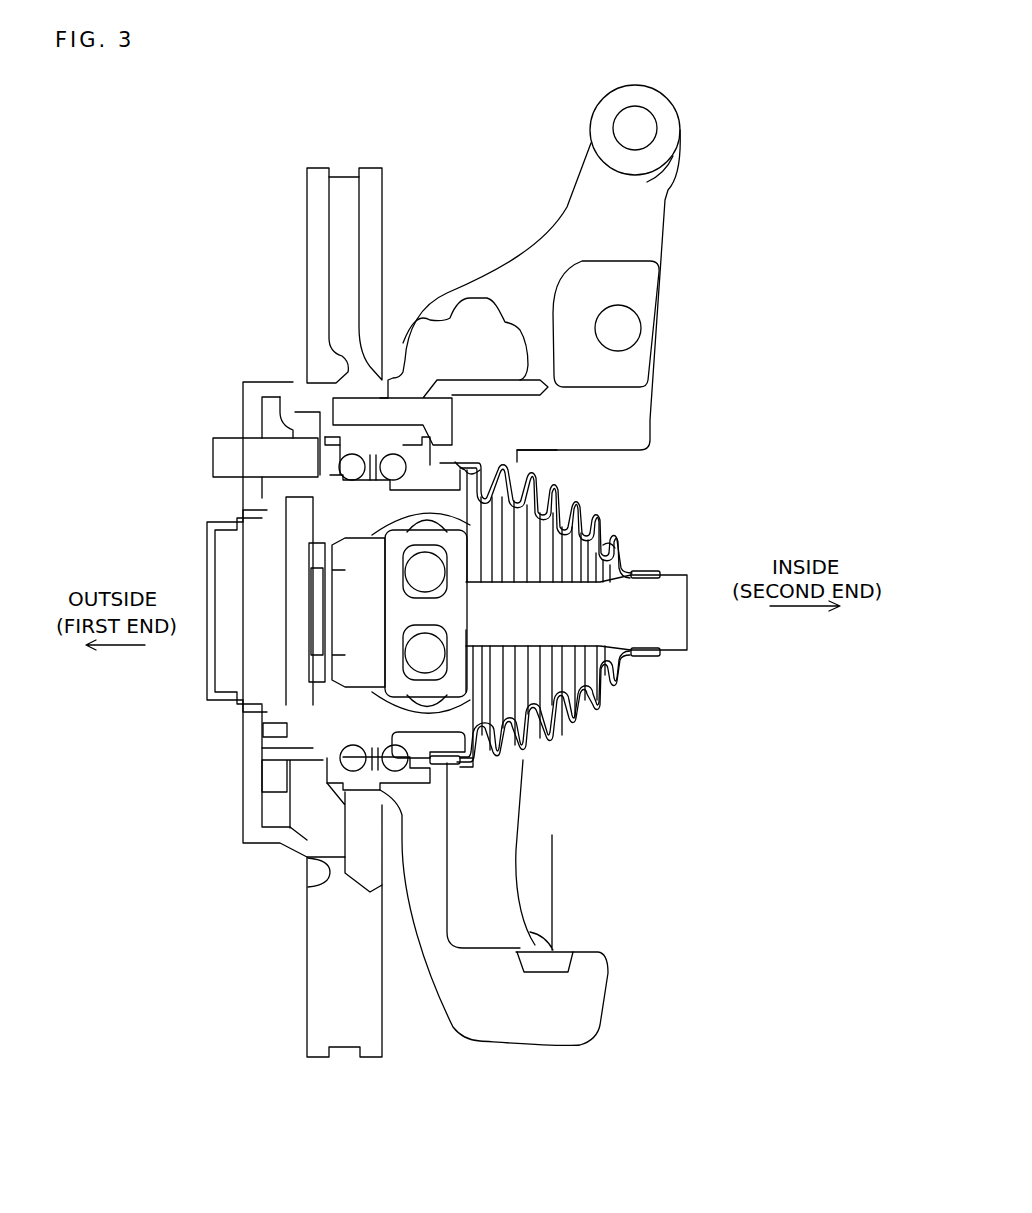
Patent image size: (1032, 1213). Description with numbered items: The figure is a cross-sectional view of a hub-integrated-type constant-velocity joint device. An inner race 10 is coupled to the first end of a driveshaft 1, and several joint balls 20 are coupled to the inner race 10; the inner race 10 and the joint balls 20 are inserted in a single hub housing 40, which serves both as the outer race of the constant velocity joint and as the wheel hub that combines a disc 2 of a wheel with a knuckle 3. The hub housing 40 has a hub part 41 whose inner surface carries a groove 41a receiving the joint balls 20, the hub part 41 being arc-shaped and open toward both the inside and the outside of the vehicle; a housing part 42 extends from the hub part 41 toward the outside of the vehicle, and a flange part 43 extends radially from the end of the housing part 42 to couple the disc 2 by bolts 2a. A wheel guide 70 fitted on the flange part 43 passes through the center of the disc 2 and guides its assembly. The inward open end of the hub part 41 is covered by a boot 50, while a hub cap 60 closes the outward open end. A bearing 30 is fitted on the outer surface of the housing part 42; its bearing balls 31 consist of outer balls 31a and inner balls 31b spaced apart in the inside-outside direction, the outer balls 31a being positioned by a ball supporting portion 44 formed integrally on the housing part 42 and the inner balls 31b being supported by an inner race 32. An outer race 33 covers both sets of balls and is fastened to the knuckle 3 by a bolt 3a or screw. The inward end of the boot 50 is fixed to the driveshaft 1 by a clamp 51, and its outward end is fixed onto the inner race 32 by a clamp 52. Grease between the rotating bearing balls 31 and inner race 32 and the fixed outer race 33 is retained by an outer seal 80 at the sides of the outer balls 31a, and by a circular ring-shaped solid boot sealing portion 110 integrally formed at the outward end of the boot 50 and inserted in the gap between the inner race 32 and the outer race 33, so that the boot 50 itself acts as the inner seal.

The driveshaft 1 is at (672, 612).
The disc 2 is at (307, 212).
The bolts 2a is at (213, 456).
The knuckle 3 is at (650, 225).
The bolt 3a is at (410, 422).
The inner race 10 is at (455, 622).
The joint balls 20 is at (455, 653).
The bearing 30 is at (328, 795).
The bearing balls 31 is at (170, 378).
The outer balls 31a is at (370, 455).
The inner balls 31b is at (352, 455).
The inner race 32 is at (400, 478).
The outer race 33 is at (505, 855).
The hub housing 40 is at (250, 778).
The hub part 41 is at (423, 723).
The groove 41a is at (420, 772).
The housing part 42 is at (360, 725).
The flange part 43 is at (272, 765).
The ball supporting portion 44 is at (340, 500).
The boot 50 is at (595, 512).
The clamp 51 is at (640, 571).
The clamp 52 is at (517, 450).
The hub cap 60 is at (318, 580).
The wheel guide 70 is at (207, 672).
The outer seal 80 is at (330, 448).
The boot sealing portion 110 is at (517, 452).